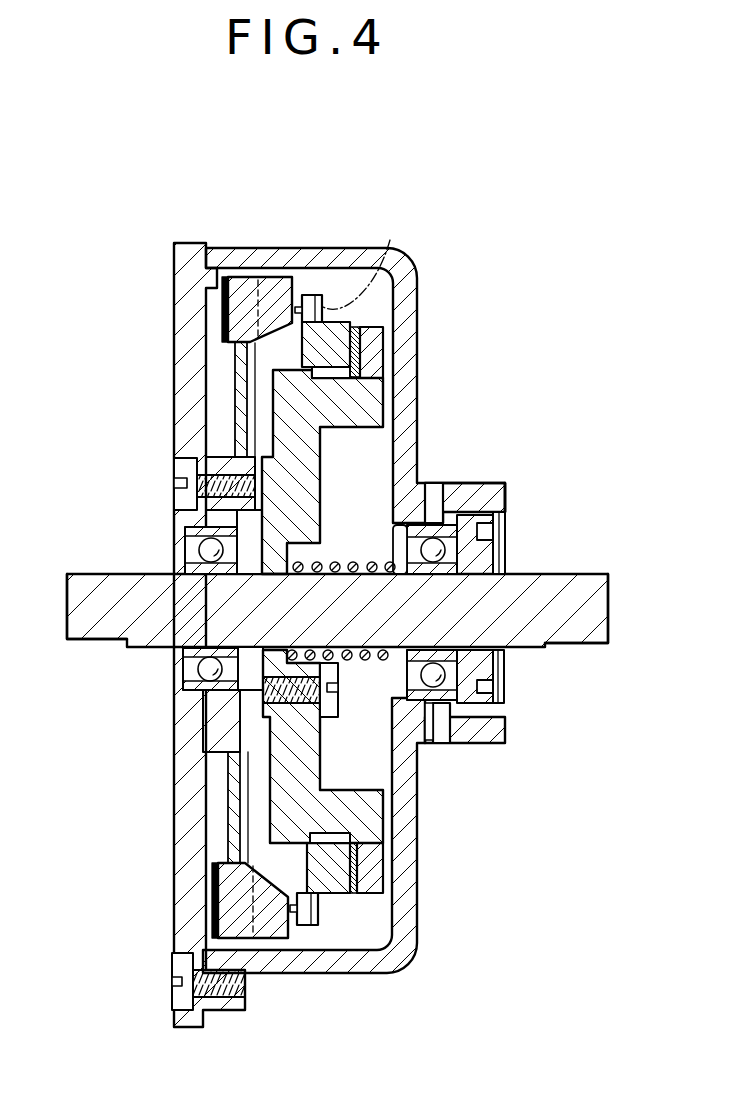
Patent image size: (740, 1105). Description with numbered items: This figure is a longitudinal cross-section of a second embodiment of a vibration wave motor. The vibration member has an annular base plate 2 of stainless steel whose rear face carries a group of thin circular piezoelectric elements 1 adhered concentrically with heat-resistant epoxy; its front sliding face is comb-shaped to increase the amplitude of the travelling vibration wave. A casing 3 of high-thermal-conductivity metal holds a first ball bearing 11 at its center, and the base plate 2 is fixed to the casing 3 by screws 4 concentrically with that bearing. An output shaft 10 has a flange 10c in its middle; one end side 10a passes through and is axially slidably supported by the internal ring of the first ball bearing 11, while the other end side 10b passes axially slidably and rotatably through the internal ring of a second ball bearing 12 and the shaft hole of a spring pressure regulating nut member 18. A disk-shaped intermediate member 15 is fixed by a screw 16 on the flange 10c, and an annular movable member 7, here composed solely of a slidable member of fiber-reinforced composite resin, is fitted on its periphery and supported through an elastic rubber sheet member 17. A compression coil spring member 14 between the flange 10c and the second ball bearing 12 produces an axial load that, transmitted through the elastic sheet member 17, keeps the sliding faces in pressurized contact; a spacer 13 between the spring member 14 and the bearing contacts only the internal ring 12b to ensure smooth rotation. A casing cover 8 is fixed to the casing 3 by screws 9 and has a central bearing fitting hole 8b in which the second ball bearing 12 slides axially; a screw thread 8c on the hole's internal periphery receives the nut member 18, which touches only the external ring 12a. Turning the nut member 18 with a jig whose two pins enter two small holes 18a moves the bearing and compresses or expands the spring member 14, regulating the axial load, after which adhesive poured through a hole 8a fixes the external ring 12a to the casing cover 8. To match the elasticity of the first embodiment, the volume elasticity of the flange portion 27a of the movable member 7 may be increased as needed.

The piezoelectric elements 1 is at (227, 272).
The annular base plate 2 is at (245, 285).
The casing 3 is at (190, 293).
The screws 4 is at (185, 471).
The movable member 7 is at (303, 312).
The casing cover 8 is at (330, 965).
The hole 8a is at (465, 505).
The bearing fitting hole 8b is at (478, 548).
The screw thread 8c is at (508, 488).
The screws 9 is at (182, 990).
The output shaft 10 is at (170, 583).
The end side of the output shaft 10a is at (90, 620).
The other end side of the output shaft 10b is at (580, 640).
The flange 10c is at (320, 502).
The first ball bearing 11 is at (203, 670).
The second ball bearing 12 is at (432, 680).
The external ring 12a is at (445, 697).
The internal ring 12b is at (508, 571).
The spacer 13 is at (435, 492).
The compression coil spring member 14 is at (343, 562).
The intermediate member 15 is at (362, 868).
The screw 16 is at (338, 705).
The elastic rubber sheet member 17 is at (362, 352).
The spring pressure regulating nut member 18 is at (500, 515).
The small holes 18a is at (503, 680).
The flange portion 27a is at (379, 260).